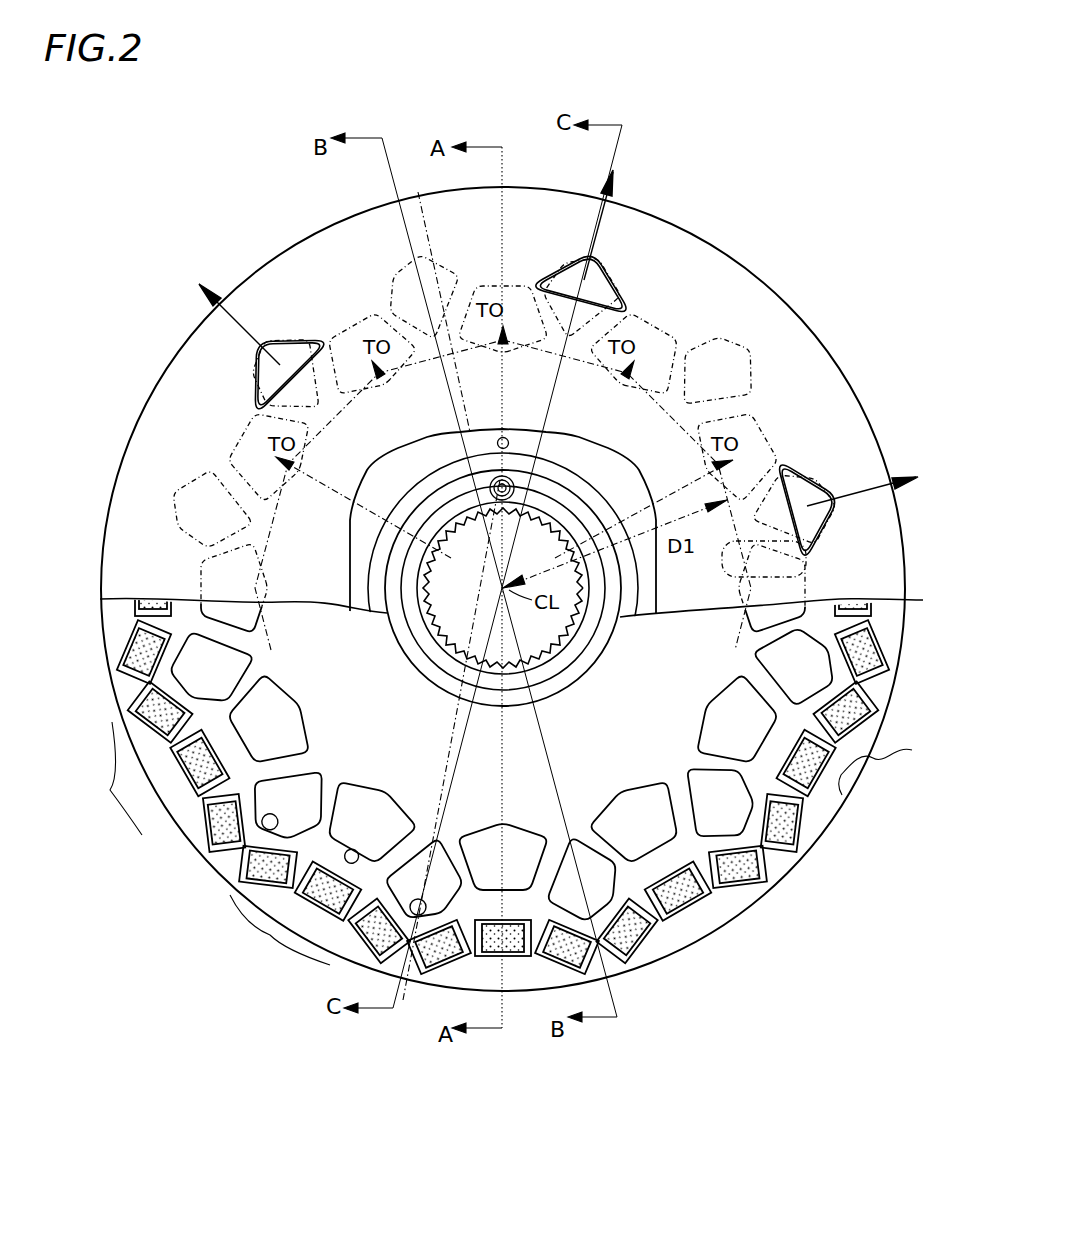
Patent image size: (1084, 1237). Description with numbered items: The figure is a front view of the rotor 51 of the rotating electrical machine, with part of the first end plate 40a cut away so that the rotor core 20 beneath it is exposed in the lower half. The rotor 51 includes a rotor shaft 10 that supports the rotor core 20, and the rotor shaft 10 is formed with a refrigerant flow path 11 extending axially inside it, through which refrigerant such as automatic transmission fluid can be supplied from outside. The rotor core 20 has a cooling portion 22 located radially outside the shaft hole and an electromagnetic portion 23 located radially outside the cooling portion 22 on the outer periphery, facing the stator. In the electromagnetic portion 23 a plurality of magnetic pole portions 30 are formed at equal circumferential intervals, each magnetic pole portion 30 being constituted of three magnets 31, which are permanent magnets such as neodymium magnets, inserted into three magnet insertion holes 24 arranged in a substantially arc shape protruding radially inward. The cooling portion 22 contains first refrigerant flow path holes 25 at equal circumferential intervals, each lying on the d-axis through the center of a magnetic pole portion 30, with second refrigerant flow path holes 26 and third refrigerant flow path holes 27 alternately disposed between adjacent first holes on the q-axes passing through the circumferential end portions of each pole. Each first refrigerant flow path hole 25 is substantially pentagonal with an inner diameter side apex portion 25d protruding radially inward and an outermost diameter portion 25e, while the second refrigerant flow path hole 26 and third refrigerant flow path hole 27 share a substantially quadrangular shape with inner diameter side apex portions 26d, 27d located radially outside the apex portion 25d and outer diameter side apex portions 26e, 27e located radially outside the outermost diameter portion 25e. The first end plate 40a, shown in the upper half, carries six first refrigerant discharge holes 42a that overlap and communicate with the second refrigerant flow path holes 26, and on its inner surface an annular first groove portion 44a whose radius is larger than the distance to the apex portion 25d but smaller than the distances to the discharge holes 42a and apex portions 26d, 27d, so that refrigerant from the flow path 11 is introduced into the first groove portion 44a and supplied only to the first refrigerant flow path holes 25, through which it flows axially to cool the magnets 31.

The rotor shaft 10 is at (598, 648).
The refrigerant flow path 11 is at (503, 588).
The rotor core 20 is at (766, 284).
The cooling portion 22 is at (788, 767).
The electromagnetic portion 23 is at (890, 759).
The magnet insertion hole 24 is at (140, 706).
The first refrigerant flow path hole 25 is at (348, 783).
The inner diameter side apex portion 25d is at (382, 787).
The outermost diameter portion 25e is at (359, 848).
The second refrigerant flow path hole 26 is at (442, 876).
The inner diameter side apex portion 26d is at (440, 840).
The outer diameter side apex portion 26e is at (424, 965).
The third refrigerant flow path hole 27 is at (290, 783).
The inner diameter side apex portion 27d is at (318, 770).
The outer diameter side apex portion 27e is at (267, 830).
The magnetic pole portion 30 is at (211, 856).
The magnet 31 is at (140, 656).
The first end plate 40a is at (147, 460).
The first refrigerant discharge hole 42a is at (290, 337).
The first groove portion 44a is at (833, 556).
The rotor 51 is at (731, 162).